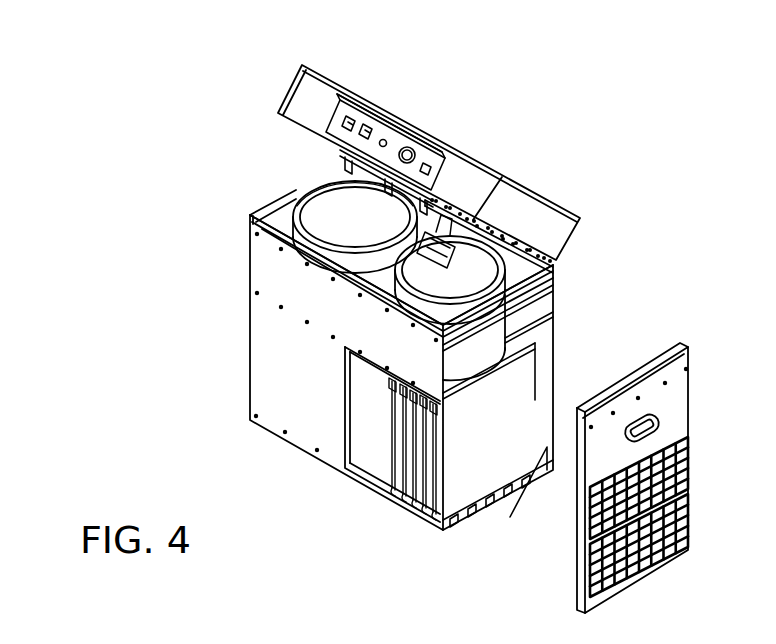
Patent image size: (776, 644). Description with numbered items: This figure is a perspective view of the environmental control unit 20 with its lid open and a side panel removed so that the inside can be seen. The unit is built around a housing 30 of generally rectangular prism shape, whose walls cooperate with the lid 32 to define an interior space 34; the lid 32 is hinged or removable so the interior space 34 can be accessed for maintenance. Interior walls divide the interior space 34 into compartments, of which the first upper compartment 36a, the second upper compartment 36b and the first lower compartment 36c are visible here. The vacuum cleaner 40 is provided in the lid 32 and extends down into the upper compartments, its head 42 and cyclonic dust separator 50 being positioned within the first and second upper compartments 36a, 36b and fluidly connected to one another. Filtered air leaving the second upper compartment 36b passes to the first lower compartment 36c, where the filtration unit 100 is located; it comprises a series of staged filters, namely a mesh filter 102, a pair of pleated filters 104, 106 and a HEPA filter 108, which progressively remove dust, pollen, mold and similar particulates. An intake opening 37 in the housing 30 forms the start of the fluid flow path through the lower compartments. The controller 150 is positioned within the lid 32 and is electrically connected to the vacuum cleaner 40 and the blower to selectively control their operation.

The environmental control unit 20 is at (253, 197).
The housing 30 is at (232, 352).
The lid 32 is at (502, 177).
The interior space 34 is at (531, 310).
The first upper compartment 36a is at (318, 204).
The second upper compartment 36b is at (478, 267).
The first lower compartment 36c is at (528, 376).
The intake opening 37 is at (682, 521).
The vacuum cleaner 40 is at (404, 124).
The head 42 is at (493, 241).
The cyclonic dust separator 50 is at (323, 196).
The filtration unit 100 is at (382, 488).
The mesh filter 102 is at (473, 475).
The pleated filter 104 is at (407, 505).
The pleated filter 106 is at (390, 485).
The HEPA filter 108 is at (368, 418).
The controller 150 is at (376, 120).